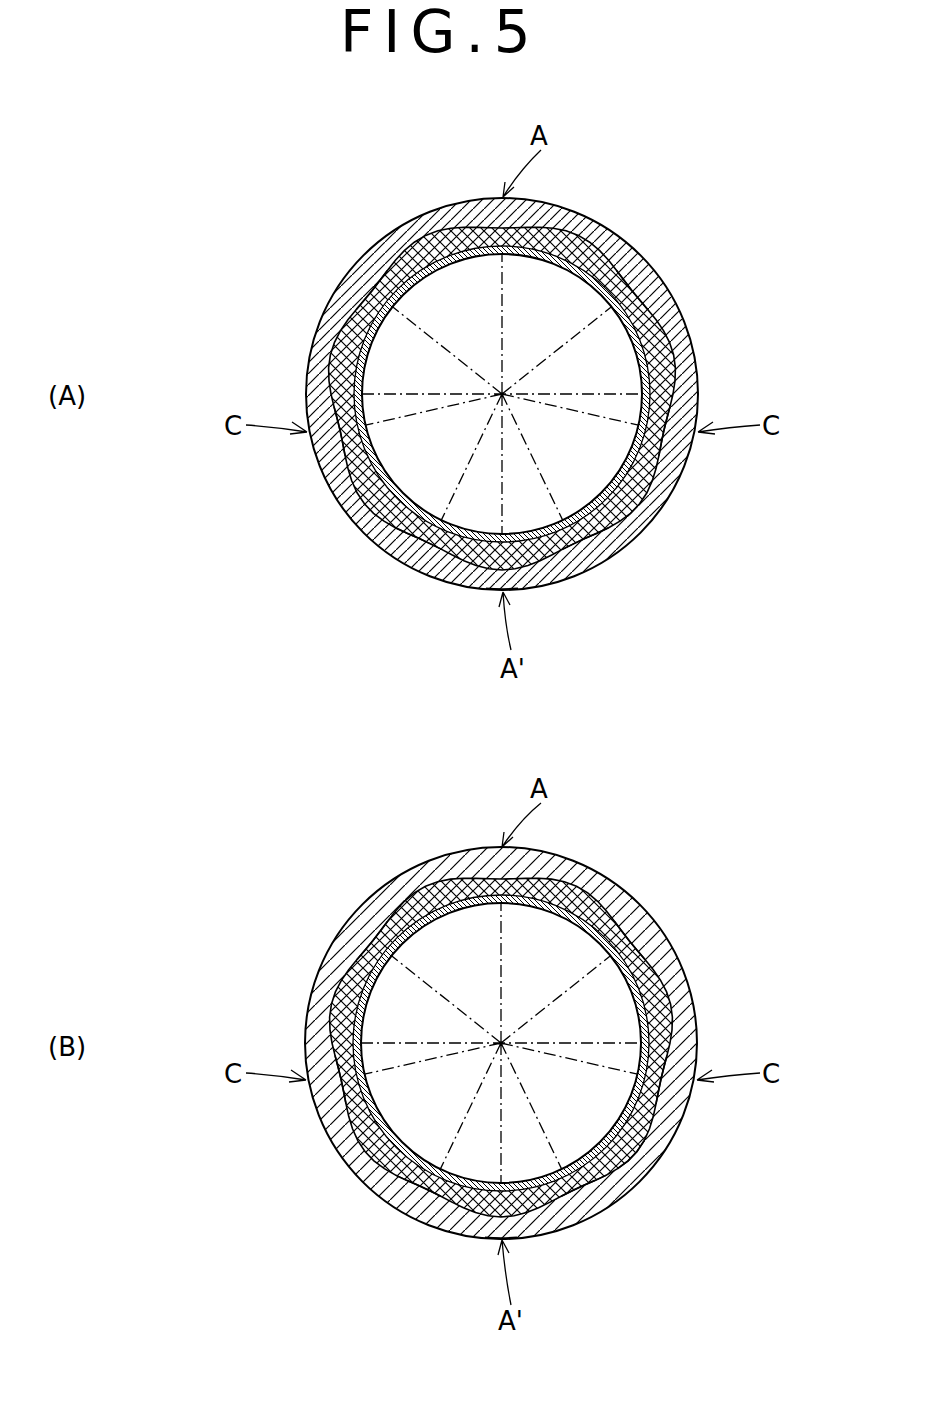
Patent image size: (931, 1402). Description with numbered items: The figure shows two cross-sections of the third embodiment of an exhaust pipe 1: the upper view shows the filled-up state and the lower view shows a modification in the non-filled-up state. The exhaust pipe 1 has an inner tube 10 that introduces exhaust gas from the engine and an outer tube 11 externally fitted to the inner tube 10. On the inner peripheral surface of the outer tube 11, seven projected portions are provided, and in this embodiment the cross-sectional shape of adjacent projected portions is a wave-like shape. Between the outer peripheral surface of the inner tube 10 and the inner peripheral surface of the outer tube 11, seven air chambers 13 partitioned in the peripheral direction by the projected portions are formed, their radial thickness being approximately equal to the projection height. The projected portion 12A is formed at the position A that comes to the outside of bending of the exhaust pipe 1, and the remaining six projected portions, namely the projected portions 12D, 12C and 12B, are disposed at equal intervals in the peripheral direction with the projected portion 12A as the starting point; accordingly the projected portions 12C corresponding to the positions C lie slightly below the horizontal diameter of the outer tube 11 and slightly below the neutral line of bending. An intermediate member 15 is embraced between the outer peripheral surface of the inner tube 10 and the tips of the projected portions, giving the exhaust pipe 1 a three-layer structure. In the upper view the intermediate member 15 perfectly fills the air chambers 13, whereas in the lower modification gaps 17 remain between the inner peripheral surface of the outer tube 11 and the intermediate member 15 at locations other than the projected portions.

The exhaust pipe 1 is at (763, 210).
The inner tube 10 is at (692, 350).
The outer tube 11 is at (665, 300).
The projected portion 12A is at (458, 212).
The projected portion 12B is at (388, 545).
The projected portion 12C is at (332, 482).
The projected portion 12D is at (345, 313).
The air chamber 13 is at (655, 500).
The intermediate member 15 is at (520, 590).
The gap 17 is at (655, 1165).